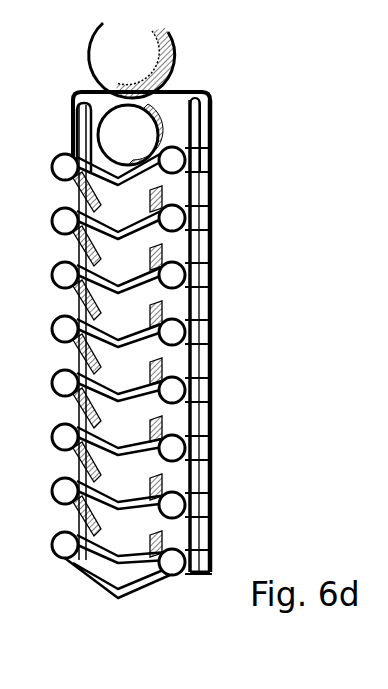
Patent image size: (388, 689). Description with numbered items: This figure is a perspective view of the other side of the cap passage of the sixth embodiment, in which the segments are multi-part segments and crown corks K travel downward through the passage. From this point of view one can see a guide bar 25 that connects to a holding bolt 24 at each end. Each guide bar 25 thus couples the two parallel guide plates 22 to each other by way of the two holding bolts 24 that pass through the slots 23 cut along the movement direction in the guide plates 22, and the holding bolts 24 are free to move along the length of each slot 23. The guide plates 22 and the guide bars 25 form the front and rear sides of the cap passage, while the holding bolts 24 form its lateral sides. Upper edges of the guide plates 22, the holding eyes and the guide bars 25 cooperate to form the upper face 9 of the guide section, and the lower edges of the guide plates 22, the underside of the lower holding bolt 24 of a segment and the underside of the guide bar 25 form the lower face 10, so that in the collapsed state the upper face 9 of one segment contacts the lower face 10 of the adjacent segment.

The crown cork K is at (178, 64).
The guide plate 22 is at (213, 108).
The slot 23 is at (212, 128).
The holding bolt 24 is at (215, 165).
The guide bar 25 is at (140, 183).
The lower face 10 is at (213, 294).
The upper face 9 is at (213, 325).